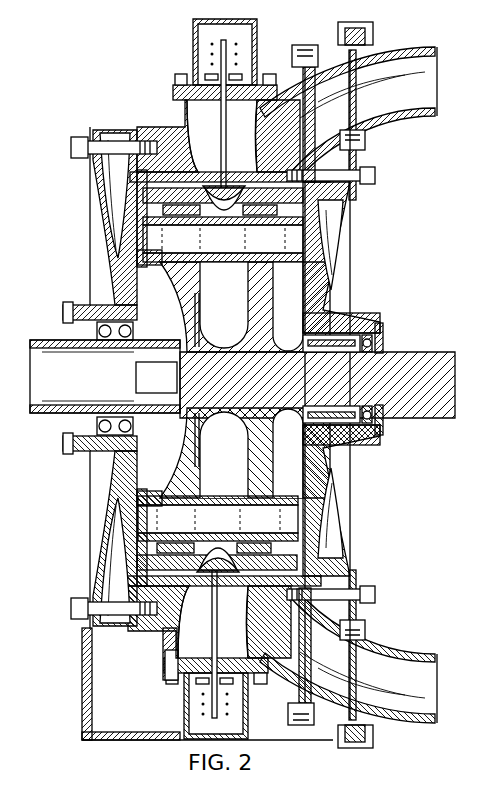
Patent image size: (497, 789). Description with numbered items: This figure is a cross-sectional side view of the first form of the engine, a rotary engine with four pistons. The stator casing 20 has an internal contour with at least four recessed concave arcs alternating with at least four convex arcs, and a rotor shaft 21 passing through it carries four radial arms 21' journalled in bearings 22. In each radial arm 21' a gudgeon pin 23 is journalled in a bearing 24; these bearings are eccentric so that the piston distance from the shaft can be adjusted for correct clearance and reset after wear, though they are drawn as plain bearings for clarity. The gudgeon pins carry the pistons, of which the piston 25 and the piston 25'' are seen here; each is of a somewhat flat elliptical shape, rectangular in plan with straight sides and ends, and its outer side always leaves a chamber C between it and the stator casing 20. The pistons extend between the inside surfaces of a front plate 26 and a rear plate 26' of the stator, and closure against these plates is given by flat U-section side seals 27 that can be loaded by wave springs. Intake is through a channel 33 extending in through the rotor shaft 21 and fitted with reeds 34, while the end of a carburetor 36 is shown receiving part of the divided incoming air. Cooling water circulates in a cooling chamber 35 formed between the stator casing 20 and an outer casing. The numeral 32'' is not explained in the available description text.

The stator casing 20 is at (172, 126).
The rotor shaft 21 is at (307, 380).
The radial arms 21' is at (250, 380).
The bearings 22 is at (305, 426).
The gudgeon pin 23 is at (220, 379).
The bearing 24 is at (220, 379).
The piston 25 is at (339, 126).
The piston 25'' is at (342, 636).
The front plate 26 is at (112, 364).
The rear plate 26' is at (352, 379).
The side seals 27 is at (102, 208).
The valve chamber 32'' is at (217, 379).
The channel 33 is at (88, 376).
The reeds 34 is at (199, 315).
The cooling chamber 35 is at (100, 170).
The end of a carburetor 36 is at (46, 343).
The chamber C is at (229, 189).